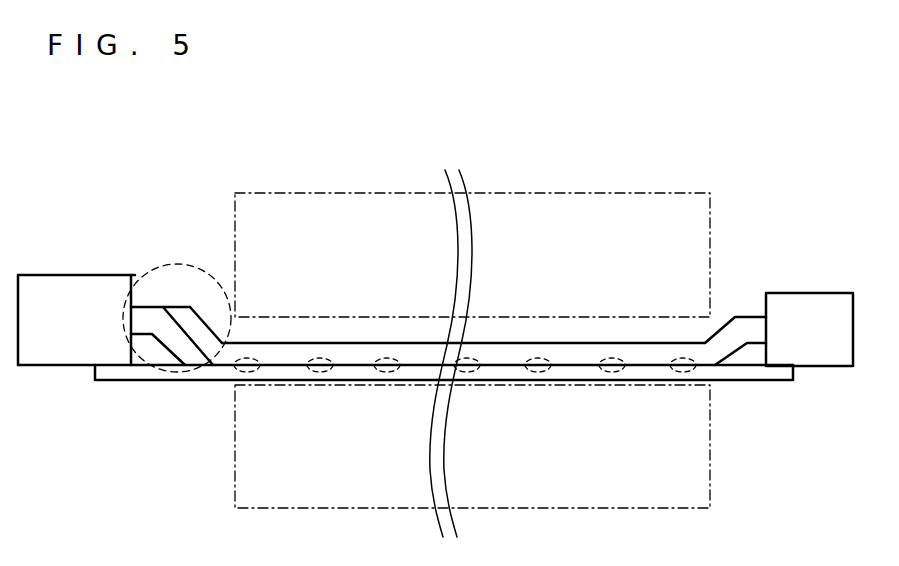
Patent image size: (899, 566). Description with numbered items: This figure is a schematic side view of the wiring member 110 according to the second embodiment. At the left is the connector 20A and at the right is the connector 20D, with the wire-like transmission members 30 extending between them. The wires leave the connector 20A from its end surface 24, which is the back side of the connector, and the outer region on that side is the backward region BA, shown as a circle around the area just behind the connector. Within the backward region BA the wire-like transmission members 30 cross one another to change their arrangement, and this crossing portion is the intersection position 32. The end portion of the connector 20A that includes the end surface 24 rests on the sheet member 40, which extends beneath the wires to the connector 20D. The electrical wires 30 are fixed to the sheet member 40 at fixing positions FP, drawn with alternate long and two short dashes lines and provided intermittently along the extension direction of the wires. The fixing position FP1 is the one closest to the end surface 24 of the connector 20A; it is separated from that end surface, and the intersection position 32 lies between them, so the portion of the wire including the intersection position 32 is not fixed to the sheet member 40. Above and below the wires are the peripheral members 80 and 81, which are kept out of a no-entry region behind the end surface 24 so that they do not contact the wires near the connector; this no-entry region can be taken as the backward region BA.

The wiring member 110 is at (158, 167).
The connector 20A is at (62, 275).
The connector 20D is at (815, 293).
The end surface 24 is at (133, 285).
The wire-like transmission member 30 is at (212, 365).
The intersection position 32 is at (205, 312).
The sheet member 40 is at (743, 372).
The peripheral member 80 is at (710, 222).
The peripheral member 81 is at (710, 468).
The backward region BA is at (180, 263).
The fixing position FP is at (387, 373).
The fixing position FP1 is at (248, 373).